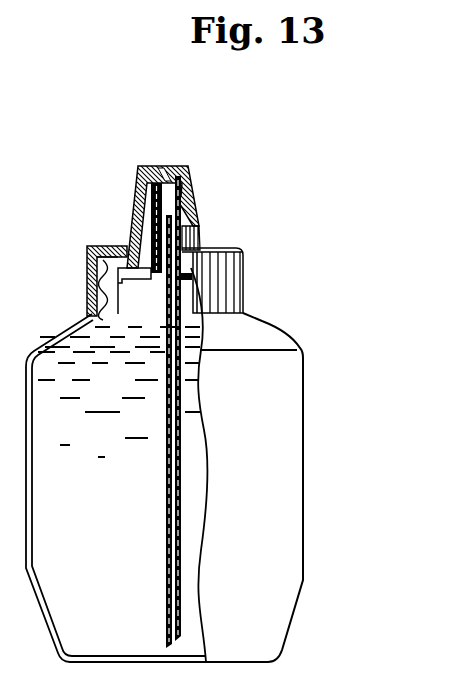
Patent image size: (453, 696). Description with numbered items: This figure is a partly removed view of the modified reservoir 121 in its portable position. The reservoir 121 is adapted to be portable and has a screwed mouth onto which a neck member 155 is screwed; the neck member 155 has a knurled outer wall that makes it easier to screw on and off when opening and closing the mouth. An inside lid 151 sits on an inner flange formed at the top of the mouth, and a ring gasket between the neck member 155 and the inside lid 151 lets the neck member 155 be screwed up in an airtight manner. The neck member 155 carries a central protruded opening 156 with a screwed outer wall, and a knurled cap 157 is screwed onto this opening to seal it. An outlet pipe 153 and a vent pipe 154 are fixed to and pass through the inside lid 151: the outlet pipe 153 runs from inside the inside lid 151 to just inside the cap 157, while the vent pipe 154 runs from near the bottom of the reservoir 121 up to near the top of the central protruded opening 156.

The reservoir 121 is at (323, 437).
The inside lid 151 is at (140, 284).
The outlet pipe 153 is at (164, 196).
The vent pipe 154 is at (166, 486).
The neck member 155 is at (92, 301).
The central protruded opening 156 is at (176, 203).
The cap 157 is at (153, 175).